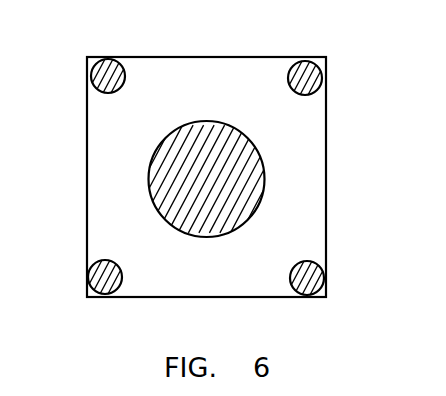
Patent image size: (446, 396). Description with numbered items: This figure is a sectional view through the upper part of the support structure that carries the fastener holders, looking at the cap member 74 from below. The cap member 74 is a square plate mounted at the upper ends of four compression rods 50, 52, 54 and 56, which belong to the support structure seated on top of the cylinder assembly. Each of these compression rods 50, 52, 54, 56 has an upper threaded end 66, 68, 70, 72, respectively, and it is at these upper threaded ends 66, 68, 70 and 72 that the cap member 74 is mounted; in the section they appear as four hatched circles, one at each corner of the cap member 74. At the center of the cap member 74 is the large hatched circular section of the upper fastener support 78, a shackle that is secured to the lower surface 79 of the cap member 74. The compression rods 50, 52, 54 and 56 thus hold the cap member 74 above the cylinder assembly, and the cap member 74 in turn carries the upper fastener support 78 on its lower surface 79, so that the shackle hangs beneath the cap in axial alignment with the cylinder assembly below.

The compression rod 50 is at (79, 263).
The compression rod 52 is at (333, 268).
The compression rod 54 is at (336, 73).
The compression rod 56 is at (111, 48).
The upper threaded end 66 is at (101, 289).
The upper threaded end 68 is at (300, 277).
The upper threaded end 70 is at (308, 78).
The upper threaded end 72 is at (110, 82).
The cap member 74 is at (326, 182).
The upper fastener support 78 is at (223, 198).
The lower surface 79 is at (287, 146).